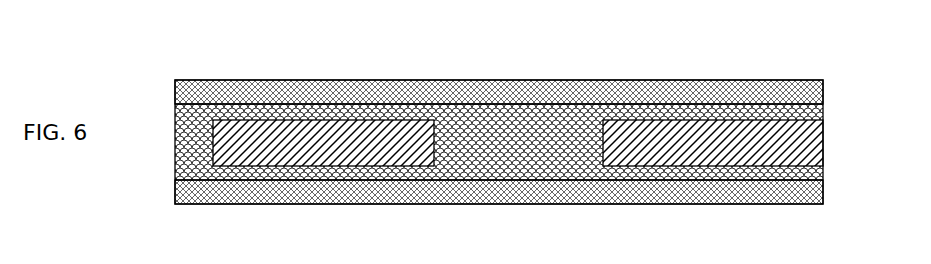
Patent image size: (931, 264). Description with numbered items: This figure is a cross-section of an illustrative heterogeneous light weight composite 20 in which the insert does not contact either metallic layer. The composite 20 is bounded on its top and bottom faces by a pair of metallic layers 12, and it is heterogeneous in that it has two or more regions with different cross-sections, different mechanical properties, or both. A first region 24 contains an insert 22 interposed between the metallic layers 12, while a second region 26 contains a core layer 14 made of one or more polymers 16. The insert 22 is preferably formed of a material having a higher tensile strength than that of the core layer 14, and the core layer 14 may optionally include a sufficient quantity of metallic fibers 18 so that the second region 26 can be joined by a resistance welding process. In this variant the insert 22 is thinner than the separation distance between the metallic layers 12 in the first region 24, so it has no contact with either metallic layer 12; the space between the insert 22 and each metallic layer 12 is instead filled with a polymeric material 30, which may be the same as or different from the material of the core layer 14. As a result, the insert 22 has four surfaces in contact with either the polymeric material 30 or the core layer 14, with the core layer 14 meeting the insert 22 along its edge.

The metallic layer 12 is at (357, 90).
The core layer 14 is at (452, 120).
The polymer 16 is at (498, 112).
The metallic fiber 18 is at (545, 125).
The heterogeneous light weight composite 20 is at (614, 51).
The insert 22 is at (248, 157).
The first region 24 is at (282, 195).
The second region 26 is at (512, 197).
The polymeric material 30 is at (327, 104).